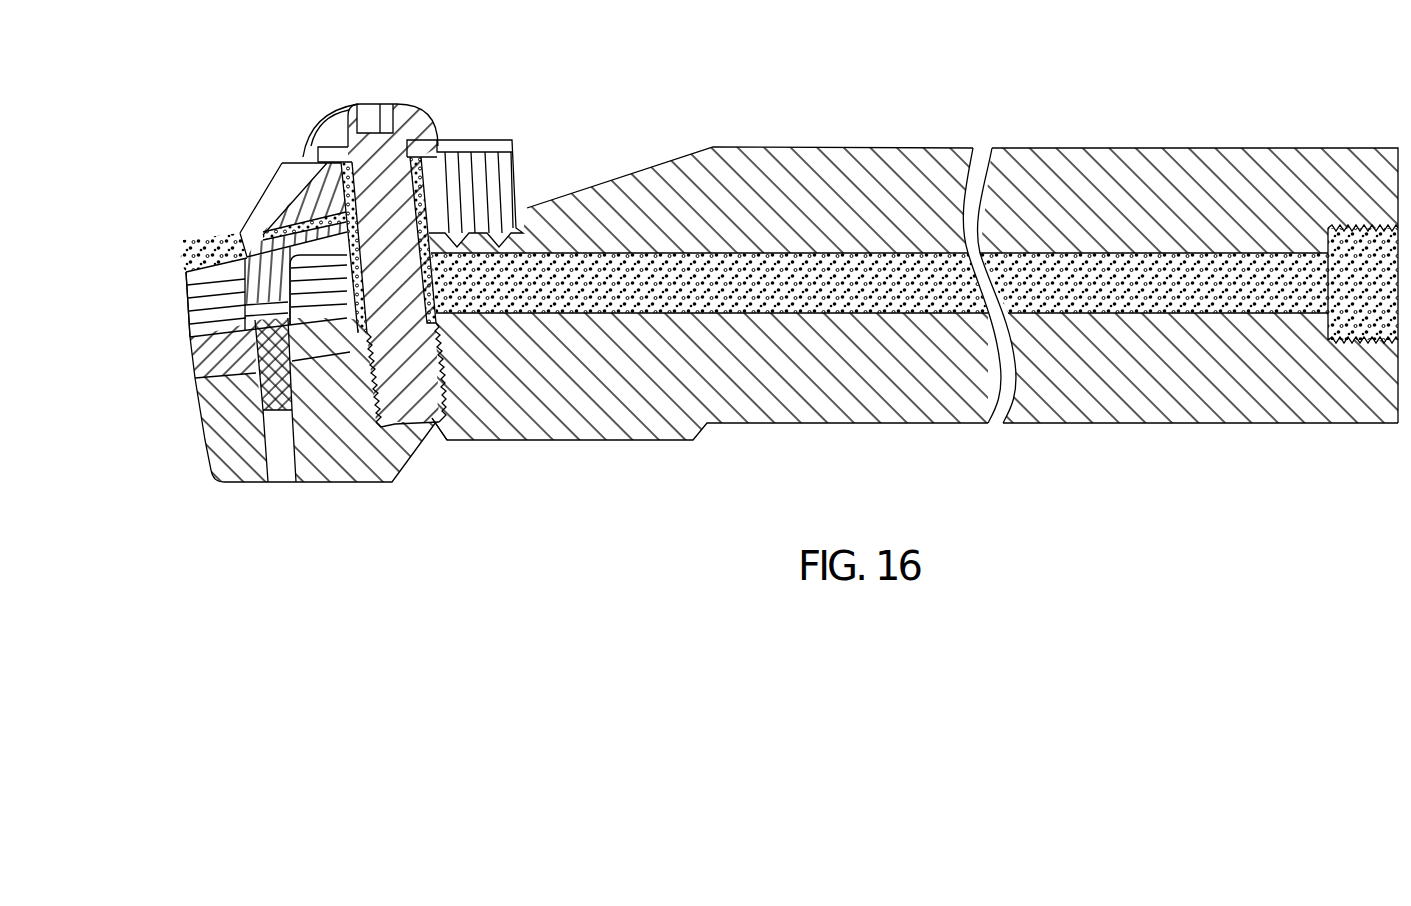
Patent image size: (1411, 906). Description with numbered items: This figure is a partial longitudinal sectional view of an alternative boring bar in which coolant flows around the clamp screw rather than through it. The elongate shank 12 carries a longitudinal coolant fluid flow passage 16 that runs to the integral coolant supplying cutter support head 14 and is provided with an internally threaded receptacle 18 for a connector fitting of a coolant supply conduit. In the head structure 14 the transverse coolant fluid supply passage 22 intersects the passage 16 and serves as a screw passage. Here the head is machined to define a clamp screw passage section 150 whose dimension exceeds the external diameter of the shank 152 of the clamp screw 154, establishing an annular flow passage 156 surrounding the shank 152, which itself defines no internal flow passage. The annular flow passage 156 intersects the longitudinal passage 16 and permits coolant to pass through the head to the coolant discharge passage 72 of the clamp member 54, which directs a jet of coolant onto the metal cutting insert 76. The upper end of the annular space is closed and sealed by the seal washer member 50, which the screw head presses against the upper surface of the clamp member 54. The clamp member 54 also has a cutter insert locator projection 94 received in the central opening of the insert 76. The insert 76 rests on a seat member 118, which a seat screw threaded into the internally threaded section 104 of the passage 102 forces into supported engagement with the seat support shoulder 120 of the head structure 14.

The elongate shank 12 is at (1100, 163).
The coolant supplying cutter support head 14 is at (348, 462).
The coolant fluid flow passage 16 is at (1143, 338).
The internally threaded receptacle 18 is at (1377, 337).
The transverse coolant fluid supply passage 22 is at (397, 289).
The seal washer member 50 is at (303, 155).
The clamp member 54 is at (503, 140).
The coolant discharge passage 72 is at (293, 208).
The metal cutting insert 76 is at (218, 289).
The cutter insert locator projection 94 is at (235, 240).
The passage 102 is at (275, 452).
The internally threaded section 104 is at (258, 392).
The seat member 118 is at (193, 345).
The seat support shoulder 120 is at (215, 363).
The clamp screw passage section 150 is at (355, 328).
The shank 152 is at (425, 183).
The clamp screw 154 is at (379, 101).
The annular flow passage 156 is at (352, 283).